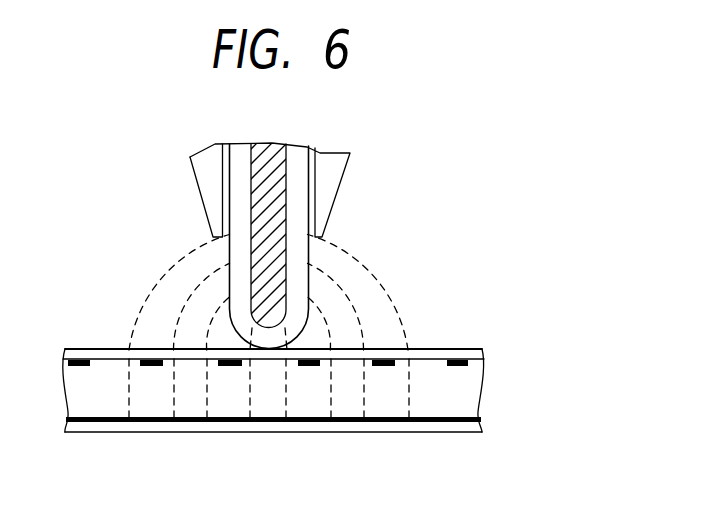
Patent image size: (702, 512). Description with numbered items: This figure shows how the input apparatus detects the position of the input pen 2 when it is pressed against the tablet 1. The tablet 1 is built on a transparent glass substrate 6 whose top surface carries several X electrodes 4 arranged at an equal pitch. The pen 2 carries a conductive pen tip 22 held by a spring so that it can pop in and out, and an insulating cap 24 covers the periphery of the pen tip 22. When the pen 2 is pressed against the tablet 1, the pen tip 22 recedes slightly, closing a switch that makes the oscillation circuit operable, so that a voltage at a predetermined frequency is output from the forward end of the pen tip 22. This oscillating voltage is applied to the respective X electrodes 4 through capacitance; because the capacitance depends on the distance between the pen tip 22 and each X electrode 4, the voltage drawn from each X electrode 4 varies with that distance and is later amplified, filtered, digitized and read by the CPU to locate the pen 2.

The tablet 1 is at (491, 404).
The input pen 2 is at (240, 218).
The X electrodes 4 is at (385, 360).
The glass substrate 6 is at (352, 423).
The pen tip 22 is at (252, 205).
The insulating cap 24 is at (230, 277).